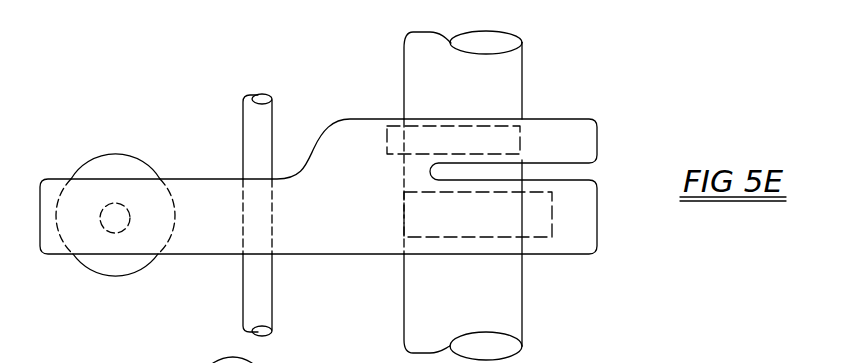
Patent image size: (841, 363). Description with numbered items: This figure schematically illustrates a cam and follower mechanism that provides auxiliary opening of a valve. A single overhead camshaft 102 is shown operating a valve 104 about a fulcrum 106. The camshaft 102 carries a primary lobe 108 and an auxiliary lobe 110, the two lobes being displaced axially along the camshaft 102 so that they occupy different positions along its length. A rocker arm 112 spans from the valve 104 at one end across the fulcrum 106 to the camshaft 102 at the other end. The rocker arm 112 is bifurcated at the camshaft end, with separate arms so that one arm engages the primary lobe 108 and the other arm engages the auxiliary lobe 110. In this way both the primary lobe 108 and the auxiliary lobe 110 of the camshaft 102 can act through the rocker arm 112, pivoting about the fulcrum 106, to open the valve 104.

The overhead camshaft 102 is at (523, 77).
The valve 104 is at (103, 163).
The fulcrum 106 is at (243, 123).
The primary lobe 108 is at (502, 222).
The auxiliary lobe 110 is at (485, 136).
The rocker arm 112 is at (310, 255).